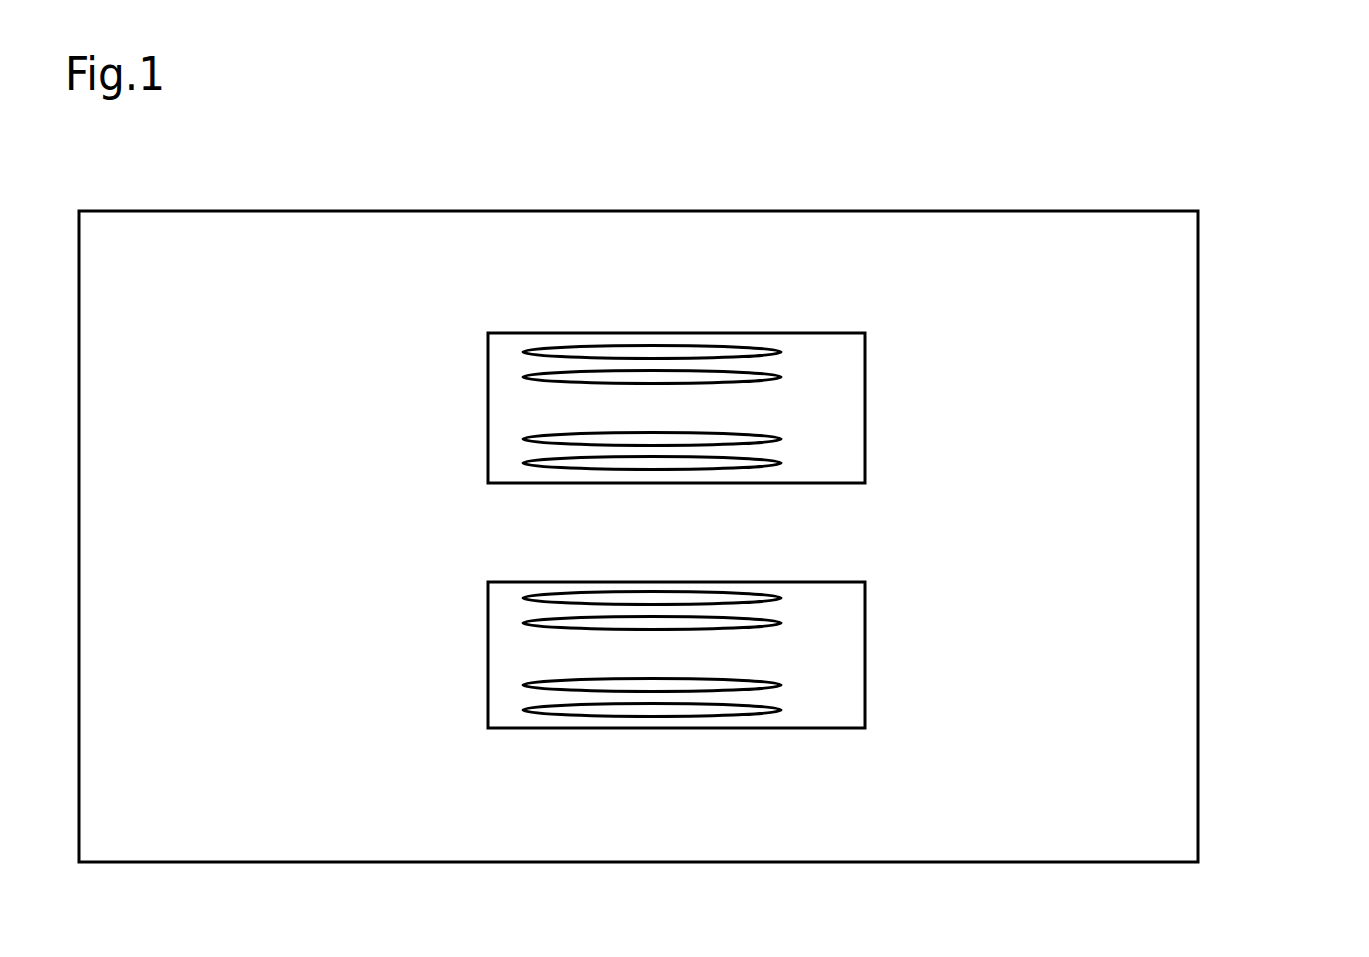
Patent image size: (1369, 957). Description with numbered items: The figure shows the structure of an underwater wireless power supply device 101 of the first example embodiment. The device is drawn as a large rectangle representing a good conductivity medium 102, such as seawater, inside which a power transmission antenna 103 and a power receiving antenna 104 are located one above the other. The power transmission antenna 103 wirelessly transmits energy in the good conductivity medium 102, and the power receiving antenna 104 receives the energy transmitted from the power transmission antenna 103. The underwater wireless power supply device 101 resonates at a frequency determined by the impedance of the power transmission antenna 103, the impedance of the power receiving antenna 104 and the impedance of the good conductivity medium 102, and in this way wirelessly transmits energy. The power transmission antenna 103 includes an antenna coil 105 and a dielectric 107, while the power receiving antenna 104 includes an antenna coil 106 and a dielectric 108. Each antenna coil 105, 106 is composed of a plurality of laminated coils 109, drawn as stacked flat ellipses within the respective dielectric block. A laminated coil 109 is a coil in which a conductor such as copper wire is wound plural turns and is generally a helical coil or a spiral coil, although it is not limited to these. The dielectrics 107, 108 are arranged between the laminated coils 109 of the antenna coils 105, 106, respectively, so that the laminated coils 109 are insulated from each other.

The underwater wireless power supply device 101 is at (667, 181).
The good conductivity medium 102 is at (162, 210).
The power transmission antenna 103 is at (890, 333).
The power receiving antenna 104 is at (890, 582).
The antenna coil 105 is at (478, 343).
The antenna coil 106 is at (478, 590).
The dielectric 107 is at (500, 348).
The dielectric 108 is at (500, 587).
The laminated coil 109 is at (713, 350).